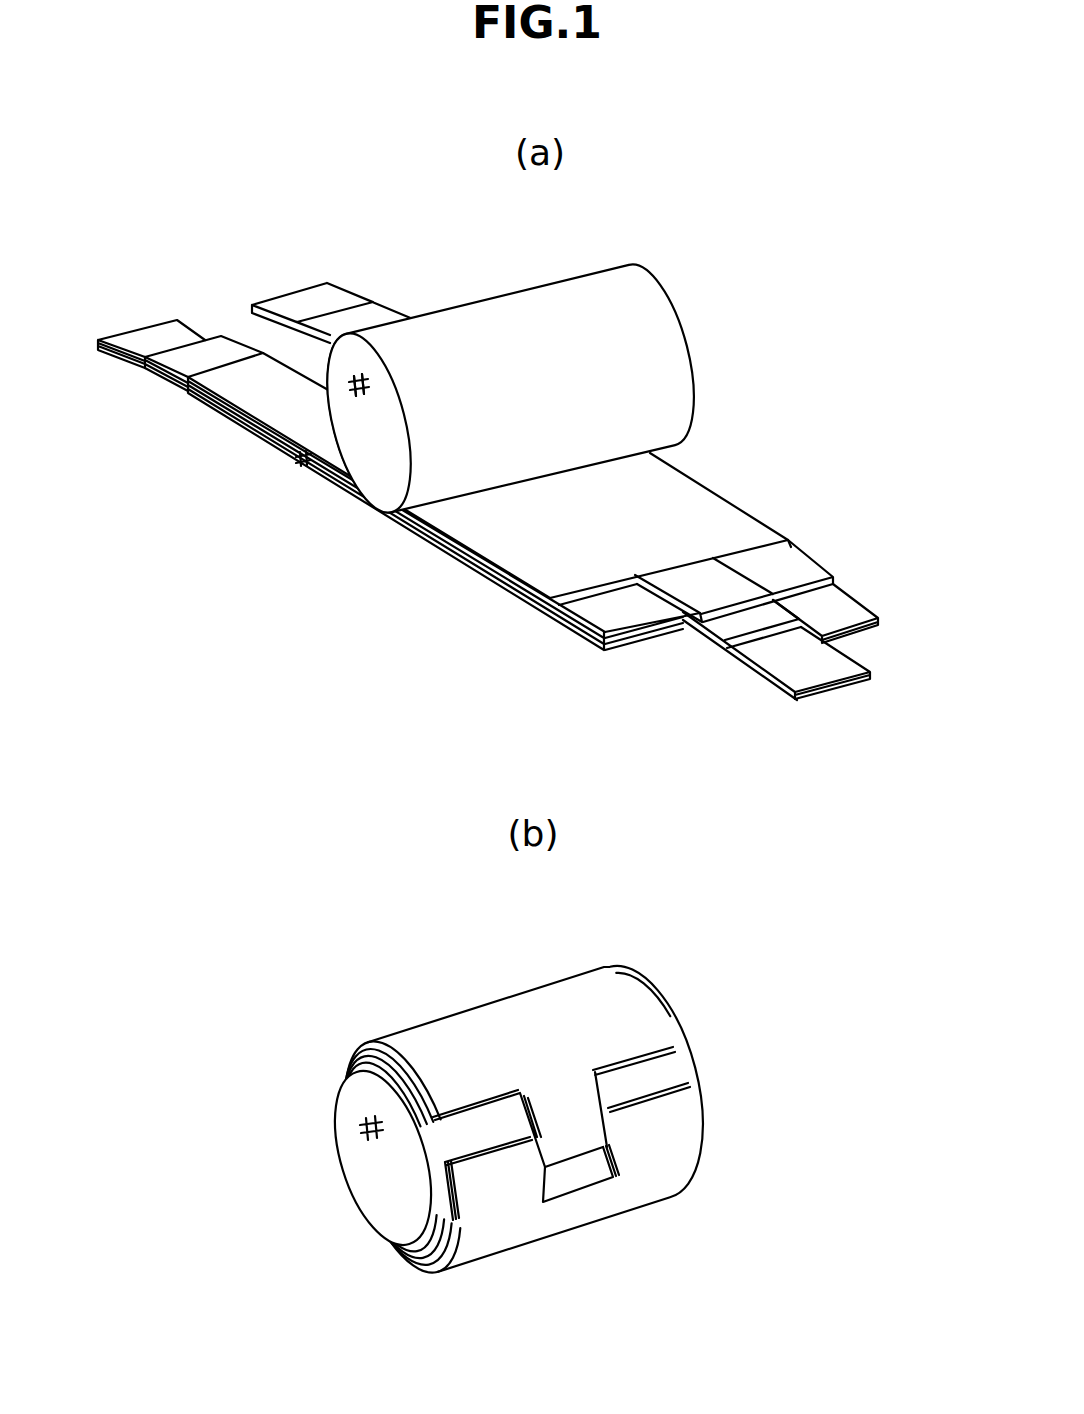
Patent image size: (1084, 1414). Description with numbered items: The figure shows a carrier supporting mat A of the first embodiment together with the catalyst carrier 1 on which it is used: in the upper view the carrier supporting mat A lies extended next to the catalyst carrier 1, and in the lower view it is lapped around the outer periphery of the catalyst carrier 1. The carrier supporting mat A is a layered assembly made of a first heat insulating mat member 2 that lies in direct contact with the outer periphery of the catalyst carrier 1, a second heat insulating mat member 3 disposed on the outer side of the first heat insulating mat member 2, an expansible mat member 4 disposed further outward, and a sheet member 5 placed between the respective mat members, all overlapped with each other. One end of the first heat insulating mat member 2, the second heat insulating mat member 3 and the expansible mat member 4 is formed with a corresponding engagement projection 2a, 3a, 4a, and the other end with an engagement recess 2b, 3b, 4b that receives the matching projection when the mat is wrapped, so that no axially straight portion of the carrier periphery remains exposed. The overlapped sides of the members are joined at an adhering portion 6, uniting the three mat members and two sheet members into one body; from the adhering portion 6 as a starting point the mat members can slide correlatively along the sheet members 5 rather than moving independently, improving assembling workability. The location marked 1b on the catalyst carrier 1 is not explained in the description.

The catalyst carrier 1 is at (653, 327).
The core mark / reference position 1b is at (320, 377).
The first heat insulating mat member 2 is at (683, 487).
The engagement projection 2a is at (663, 587).
The engagement recess 2b is at (590, 1173).
The second heat insulating mat member 3 is at (797, 568).
The engagement projection 3a is at (737, 632).
The engagement recess 3b is at (253, 342).
The expansible mat member 4 is at (845, 605).
The engagement projection 4a is at (847, 667).
The engagement recess 4b is at (212, 312).
The sheet member 5 is at (207, 391).
The adhering portion 6 is at (322, 470).
The carrier supporting mat A is at (160, 400).